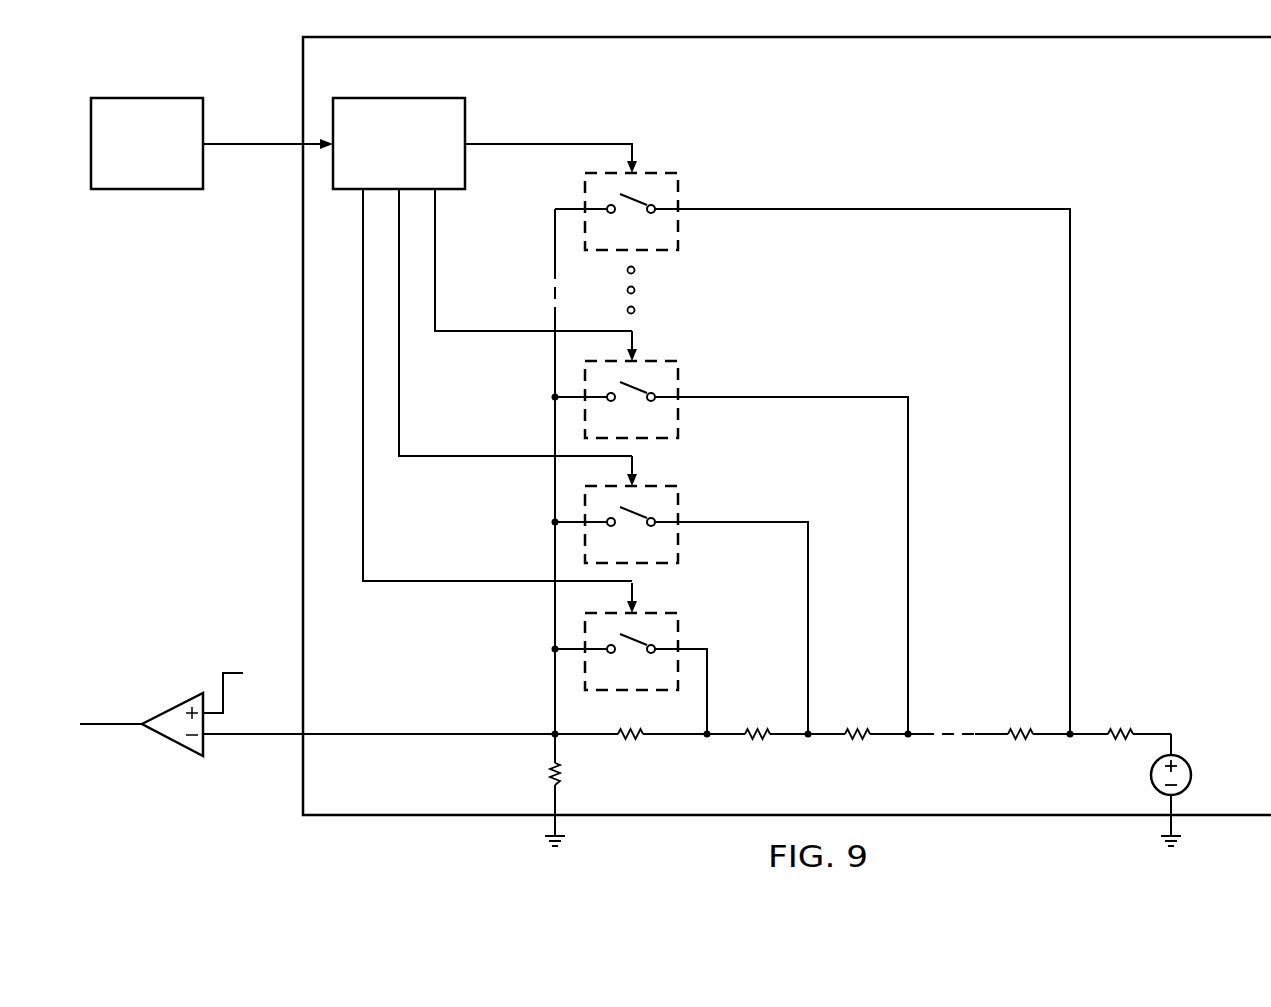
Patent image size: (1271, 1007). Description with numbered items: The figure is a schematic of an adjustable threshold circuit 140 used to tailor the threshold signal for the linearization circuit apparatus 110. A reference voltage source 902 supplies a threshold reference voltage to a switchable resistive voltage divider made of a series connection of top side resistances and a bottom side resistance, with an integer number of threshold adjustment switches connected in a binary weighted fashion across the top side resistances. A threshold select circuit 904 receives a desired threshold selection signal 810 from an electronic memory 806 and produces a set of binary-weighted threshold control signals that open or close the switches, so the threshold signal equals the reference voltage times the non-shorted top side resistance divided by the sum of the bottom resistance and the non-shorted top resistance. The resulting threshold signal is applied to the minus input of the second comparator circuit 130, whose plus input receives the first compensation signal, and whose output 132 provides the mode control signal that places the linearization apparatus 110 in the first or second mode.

The linearization circuit apparatus 110 is at (138, 307).
The electronic memory 806 is at (148, 97).
The threshold setting value 810 is at (253, 146).
The threshold select circuit 904 is at (385, 97).
The adjustable threshold circuit 140 is at (813, 118).
The second comparator circuit 130 is at (172, 708).
The output 132 is at (110, 728).
The reference voltage source 902 is at (1150, 775).